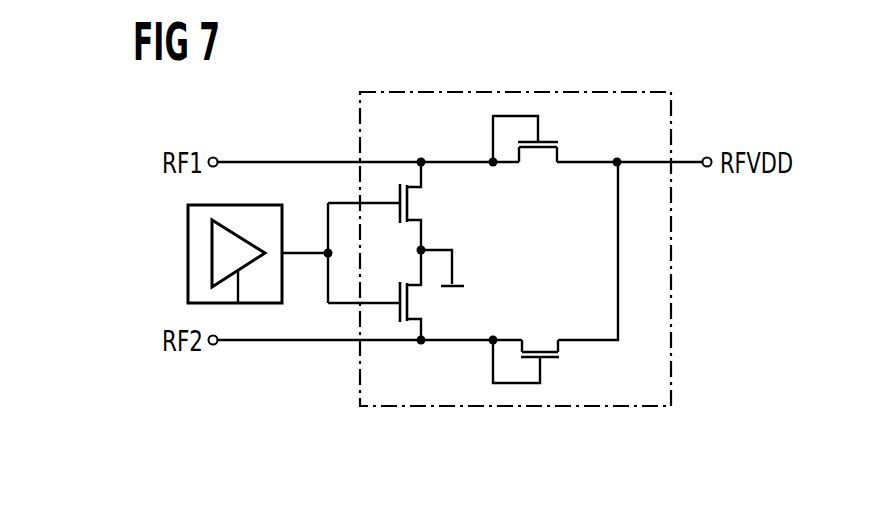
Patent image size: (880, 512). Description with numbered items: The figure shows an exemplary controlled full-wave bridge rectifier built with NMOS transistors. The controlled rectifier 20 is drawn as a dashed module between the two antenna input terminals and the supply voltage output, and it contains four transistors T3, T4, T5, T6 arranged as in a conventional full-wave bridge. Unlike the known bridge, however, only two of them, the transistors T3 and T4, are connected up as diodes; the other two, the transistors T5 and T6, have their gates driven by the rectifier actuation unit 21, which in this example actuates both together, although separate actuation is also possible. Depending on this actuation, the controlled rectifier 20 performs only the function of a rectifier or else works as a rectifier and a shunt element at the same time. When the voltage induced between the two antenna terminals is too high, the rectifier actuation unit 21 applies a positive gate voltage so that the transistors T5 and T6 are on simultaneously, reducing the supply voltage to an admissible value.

The controlled rectifier 20 is at (571, 91).
The rectifier actuation unit 21 is at (188, 253).
The transistor T3 is at (540, 150).
The transistor T4 is at (534, 347).
The transistor T5 is at (411, 198).
The transistor T6 is at (411, 300).